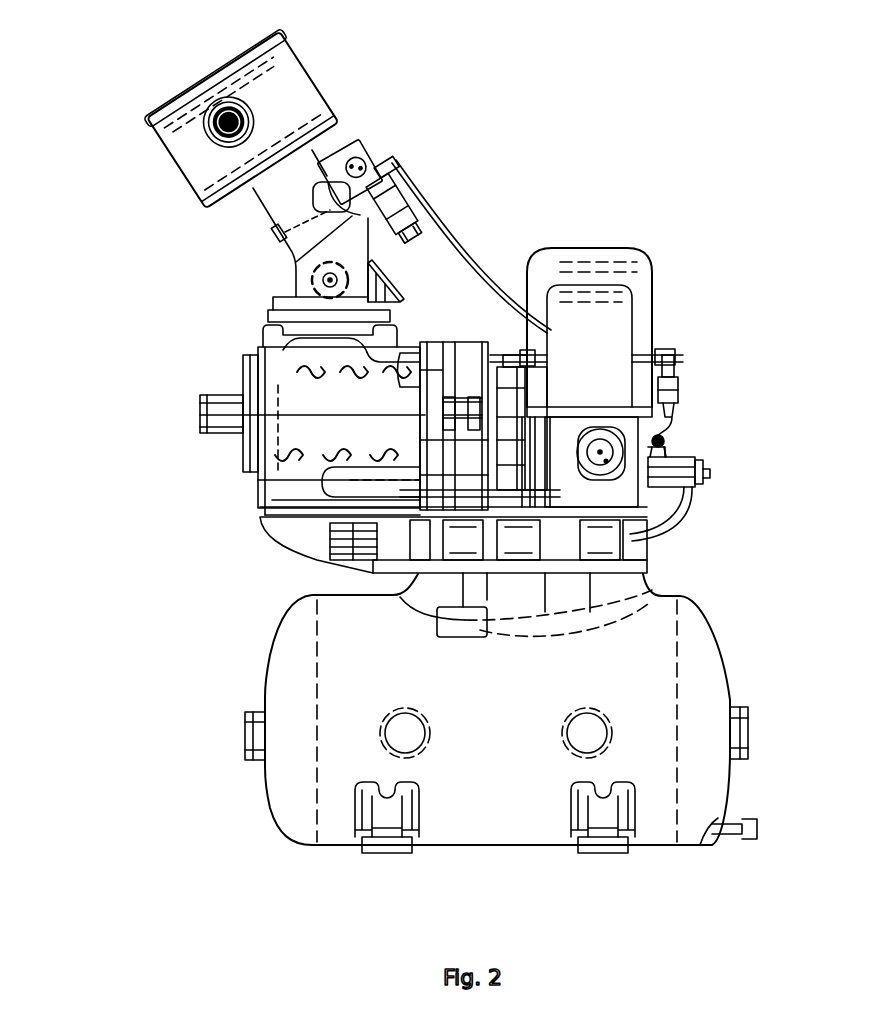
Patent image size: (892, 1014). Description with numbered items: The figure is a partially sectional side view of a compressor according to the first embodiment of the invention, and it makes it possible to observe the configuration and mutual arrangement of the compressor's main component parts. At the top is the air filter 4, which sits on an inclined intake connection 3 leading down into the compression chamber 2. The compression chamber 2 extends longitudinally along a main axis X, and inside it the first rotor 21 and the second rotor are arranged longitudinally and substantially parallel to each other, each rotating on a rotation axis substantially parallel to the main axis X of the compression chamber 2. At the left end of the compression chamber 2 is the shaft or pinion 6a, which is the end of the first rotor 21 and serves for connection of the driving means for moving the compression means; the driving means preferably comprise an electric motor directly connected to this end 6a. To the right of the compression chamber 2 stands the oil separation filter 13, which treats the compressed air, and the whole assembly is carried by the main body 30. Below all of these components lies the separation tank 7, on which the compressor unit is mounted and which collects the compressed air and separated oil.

The compression chamber 2 is at (391, 465).
The intake connection elbow 3 is at (290, 250).
The air filter 4 is at (180, 120).
The shaft or pinion 6a is at (205, 393).
The separation tank 7 is at (283, 687).
The oil separation filter 13 is at (637, 283).
The first rotor 21 is at (323, 427).
The main body 30 is at (677, 530).
The main axis X is at (190, 410).